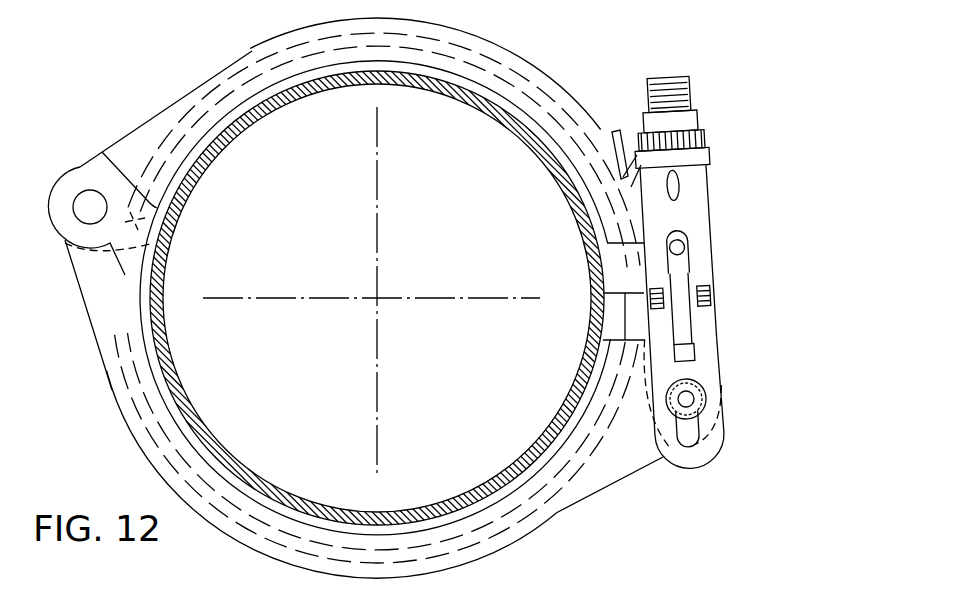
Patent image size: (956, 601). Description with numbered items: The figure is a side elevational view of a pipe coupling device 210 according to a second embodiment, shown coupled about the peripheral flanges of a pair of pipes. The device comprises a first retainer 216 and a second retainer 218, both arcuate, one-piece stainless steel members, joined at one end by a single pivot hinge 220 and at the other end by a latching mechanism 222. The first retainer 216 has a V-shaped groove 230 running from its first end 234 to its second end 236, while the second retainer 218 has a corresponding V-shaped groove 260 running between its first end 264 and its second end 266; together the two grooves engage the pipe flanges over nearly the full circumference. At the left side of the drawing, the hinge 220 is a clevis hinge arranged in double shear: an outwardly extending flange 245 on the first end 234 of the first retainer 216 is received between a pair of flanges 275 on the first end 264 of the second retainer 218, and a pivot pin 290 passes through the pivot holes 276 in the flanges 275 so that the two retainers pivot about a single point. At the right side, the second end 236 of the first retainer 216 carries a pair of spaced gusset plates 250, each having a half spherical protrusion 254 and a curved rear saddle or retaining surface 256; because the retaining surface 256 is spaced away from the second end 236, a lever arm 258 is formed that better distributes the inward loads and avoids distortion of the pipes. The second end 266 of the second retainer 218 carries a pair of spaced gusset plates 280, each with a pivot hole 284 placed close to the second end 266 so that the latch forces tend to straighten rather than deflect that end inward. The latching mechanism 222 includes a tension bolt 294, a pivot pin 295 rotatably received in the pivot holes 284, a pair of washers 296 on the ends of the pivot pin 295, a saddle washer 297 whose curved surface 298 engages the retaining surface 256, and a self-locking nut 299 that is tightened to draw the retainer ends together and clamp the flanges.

The pipe coupling device 210 is at (615, 85).
The first retainer 216 is at (247, 50).
The second retainer 218 is at (560, 527).
The single pivot hinge 220 is at (131, 120).
The latching mechanism 222 is at (726, 185).
The V-shaped groove 230 is at (522, 78).
The first end 234 is at (173, 210).
The second end 236 is at (607, 300).
The outwardly extending flange 245 is at (150, 244).
The gusset plates 250 is at (708, 208).
The half spherical protrusion 254 is at (692, 278).
The retaining surface 256 is at (712, 191).
The lever arm 258 is at (593, 238).
The V-shaped groove 260 is at (486, 540).
The first end 264 is at (170, 226).
The second end 266 is at (603, 335).
The flanges 275 is at (60, 243).
The pivot holes 276 is at (90, 192).
The gusset plates 280 is at (641, 473).
The pivot hole 284 is at (722, 390).
The pivot pin 290 is at (125, 250).
The tension bolt 294 is at (695, 320).
The pivot pin 295 is at (704, 410).
The washers 296 is at (695, 401).
The saddle washer 297 is at (715, 172).
The curved surface 298 is at (715, 248).
The self-locking nut 299 is at (705, 140).